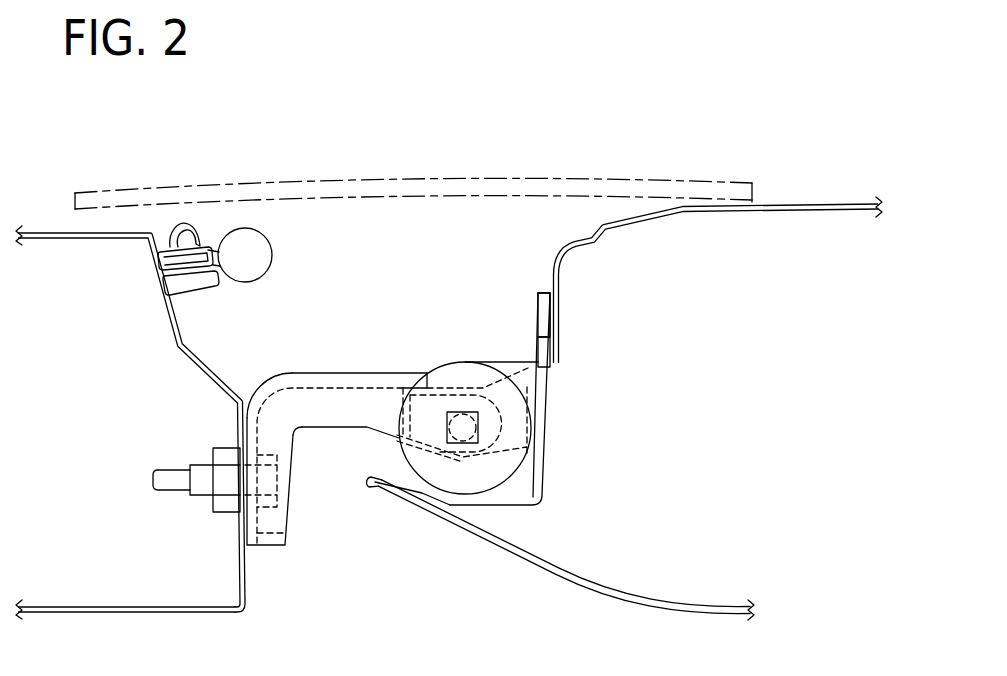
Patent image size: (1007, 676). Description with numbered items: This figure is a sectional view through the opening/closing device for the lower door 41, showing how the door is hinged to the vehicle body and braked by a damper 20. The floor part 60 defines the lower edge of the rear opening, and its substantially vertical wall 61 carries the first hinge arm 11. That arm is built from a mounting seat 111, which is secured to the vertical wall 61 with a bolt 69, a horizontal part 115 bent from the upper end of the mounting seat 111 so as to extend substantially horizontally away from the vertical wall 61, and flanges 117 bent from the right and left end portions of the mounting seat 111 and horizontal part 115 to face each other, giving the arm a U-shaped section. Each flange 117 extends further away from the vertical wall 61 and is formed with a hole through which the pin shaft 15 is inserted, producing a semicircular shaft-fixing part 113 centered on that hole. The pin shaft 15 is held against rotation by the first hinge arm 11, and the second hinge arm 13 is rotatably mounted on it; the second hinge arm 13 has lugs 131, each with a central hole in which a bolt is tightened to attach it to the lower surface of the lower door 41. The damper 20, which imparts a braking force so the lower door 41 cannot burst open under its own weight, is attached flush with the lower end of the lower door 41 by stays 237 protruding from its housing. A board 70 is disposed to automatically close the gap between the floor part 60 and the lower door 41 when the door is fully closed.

The first hinge arm 11 is at (386, 438).
The second hinge arm 13 is at (529, 348).
The pin shaft 15 is at (463, 445).
The damper 20 is at (505, 478).
The lower door 41 is at (798, 207).
The floor part 60 is at (42, 228).
The vertical wall 61 is at (243, 580).
The bolt 69 is at (285, 493).
The board 70 is at (256, 182).
The mounting seat 111 is at (283, 533).
The shaft-fixing part 113 is at (499, 427).
The horizontal part 115 is at (368, 373).
The flange 117 is at (303, 428).
The lug 131 is at (532, 353).
The stay 237 is at (535, 315).